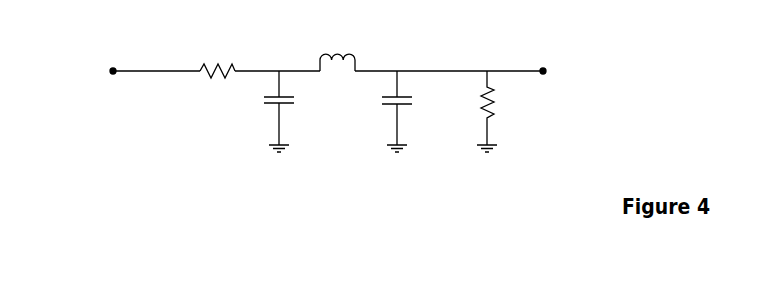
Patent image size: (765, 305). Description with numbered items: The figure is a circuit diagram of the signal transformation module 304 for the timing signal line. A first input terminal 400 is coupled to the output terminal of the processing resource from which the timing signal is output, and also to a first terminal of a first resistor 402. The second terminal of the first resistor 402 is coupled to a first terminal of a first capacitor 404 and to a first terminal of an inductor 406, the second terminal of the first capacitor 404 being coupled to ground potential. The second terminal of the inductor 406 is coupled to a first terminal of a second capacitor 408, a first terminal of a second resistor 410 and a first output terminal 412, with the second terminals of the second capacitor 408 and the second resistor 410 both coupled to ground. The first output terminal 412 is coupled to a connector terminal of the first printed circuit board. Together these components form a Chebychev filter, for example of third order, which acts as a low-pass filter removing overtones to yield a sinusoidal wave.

The first input terminal 400 is at (113, 70).
The first resistor 402 is at (204, 76).
The first capacitor 404 is at (272, 106).
The inductor 406 is at (333, 54).
The second capacitor 408 is at (388, 101).
The second resistor 410 is at (492, 111).
The first output terminal 412 is at (543, 71).
The signal transformation module 304 is at (159, 210).